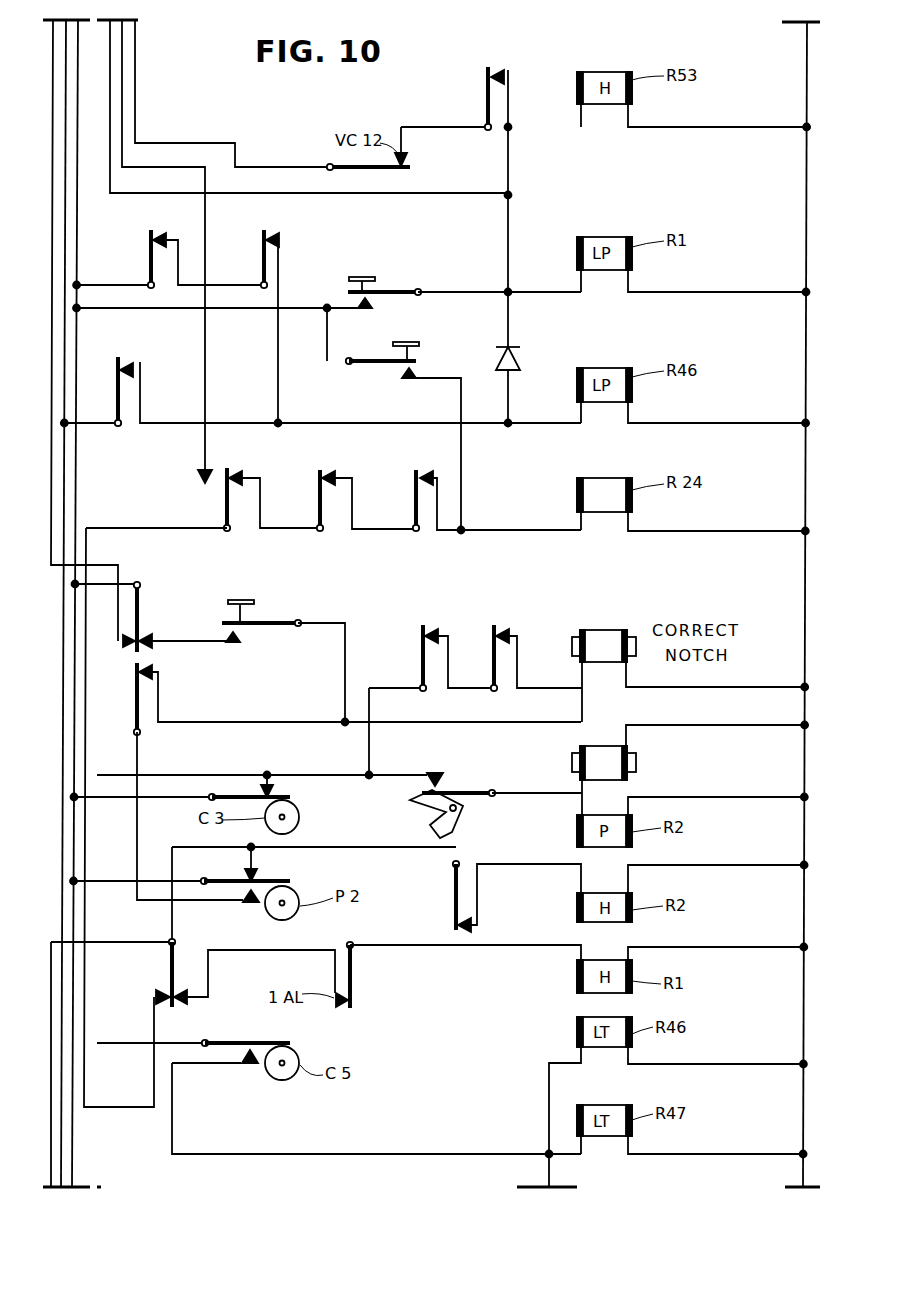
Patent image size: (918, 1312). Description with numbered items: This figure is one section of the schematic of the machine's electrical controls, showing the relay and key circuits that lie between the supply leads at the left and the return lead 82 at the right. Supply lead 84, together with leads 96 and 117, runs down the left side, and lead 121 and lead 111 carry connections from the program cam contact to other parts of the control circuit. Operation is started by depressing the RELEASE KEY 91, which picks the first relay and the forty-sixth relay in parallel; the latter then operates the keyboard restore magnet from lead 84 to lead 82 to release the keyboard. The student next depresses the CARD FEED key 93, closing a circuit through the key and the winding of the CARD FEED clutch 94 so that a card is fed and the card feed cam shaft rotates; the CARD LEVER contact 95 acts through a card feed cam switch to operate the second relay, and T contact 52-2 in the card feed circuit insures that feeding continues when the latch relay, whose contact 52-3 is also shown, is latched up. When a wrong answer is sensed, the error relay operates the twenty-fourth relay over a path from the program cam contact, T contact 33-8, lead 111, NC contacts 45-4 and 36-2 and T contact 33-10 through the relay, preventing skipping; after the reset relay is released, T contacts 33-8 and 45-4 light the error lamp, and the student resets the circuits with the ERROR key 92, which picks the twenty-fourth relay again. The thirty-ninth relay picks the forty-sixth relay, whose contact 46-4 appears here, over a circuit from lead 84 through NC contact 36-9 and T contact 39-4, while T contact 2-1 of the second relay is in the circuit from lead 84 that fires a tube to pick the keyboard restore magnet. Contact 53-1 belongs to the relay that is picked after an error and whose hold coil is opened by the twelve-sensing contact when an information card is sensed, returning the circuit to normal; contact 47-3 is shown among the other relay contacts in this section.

The conductor line 96 is at (55, 55).
The lead 84 is at (77, 110).
The conductor line 117 is at (62, 250).
The lead 121 is at (47, 1170).
The lead 111 is at (86, 705).
The lead 82 is at (807, 92).
The contact of relay R53 53-1 is at (508, 72).
The NC contact of relay R36 36-9 is at (166, 238).
The T contact of relay R39 39-4 is at (278, 238).
The contact of relay R52 52-3 is at (132, 362).
The contact of relay R45 45-4 is at (212, 472).
The NC contact of relay R36 36-2 is at (336, 476).
The T contact of relay R33 33-10 is at (434, 476).
The RELEASE KEY 91 is at (348, 280).
The ERROR key 92 is at (418, 350).
The CARD FEED key 93 is at (242, 640).
The T contact of relay R52 52-2 is at (160, 672).
The contact of relay R46 46-4 is at (436, 632).
The relay contact 47-3 is at (508, 632).
The CARD FEED clutch 94 is at (576, 764).
The CARD LEVER contact 95 is at (458, 820).
The T contact of relay R2 2-1 is at (474, 924).
The T contact of relay R33 33-8 is at (160, 994).